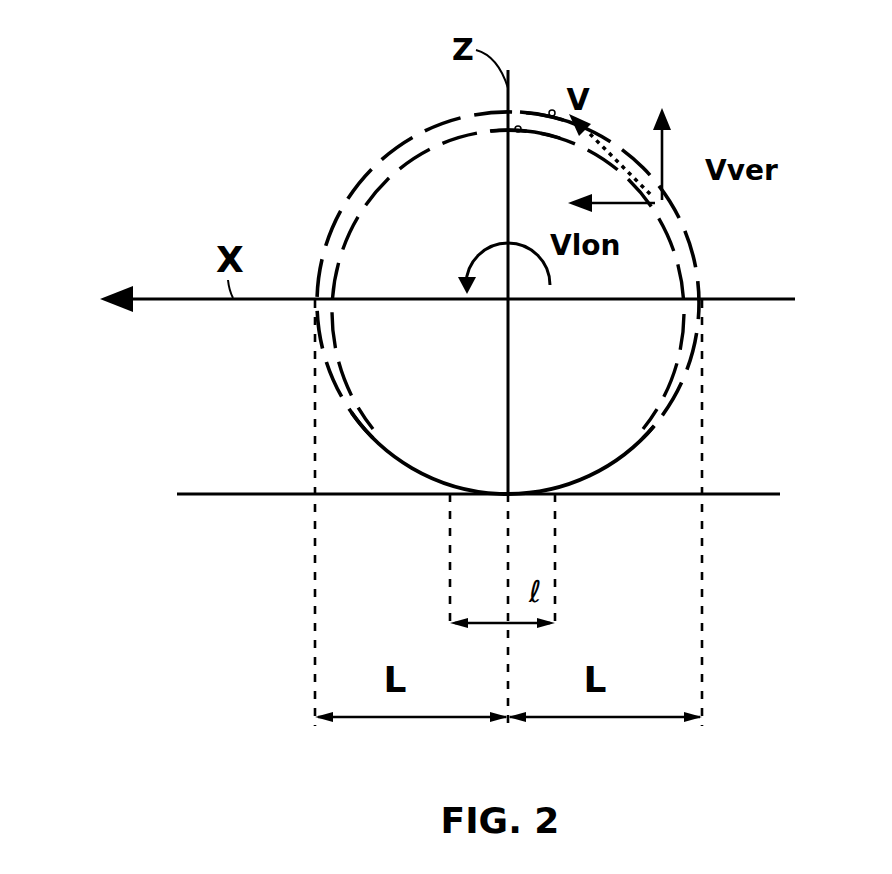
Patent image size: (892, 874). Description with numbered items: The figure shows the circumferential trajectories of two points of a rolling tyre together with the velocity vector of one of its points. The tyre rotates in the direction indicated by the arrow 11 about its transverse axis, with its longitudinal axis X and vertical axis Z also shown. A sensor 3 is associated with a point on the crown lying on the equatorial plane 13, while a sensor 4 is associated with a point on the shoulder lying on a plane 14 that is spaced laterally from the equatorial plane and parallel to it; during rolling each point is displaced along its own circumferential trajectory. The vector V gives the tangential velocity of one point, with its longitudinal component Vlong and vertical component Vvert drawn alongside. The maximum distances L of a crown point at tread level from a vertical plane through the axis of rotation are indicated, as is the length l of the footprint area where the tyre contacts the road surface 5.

The sensor 3 is at (551, 112).
The sensor 4 is at (519, 131).
The road surface 5 is at (235, 493).
The arrow 11 is at (487, 243).
The equatorial plane 13 is at (352, 187).
The plane 14 is at (335, 227).